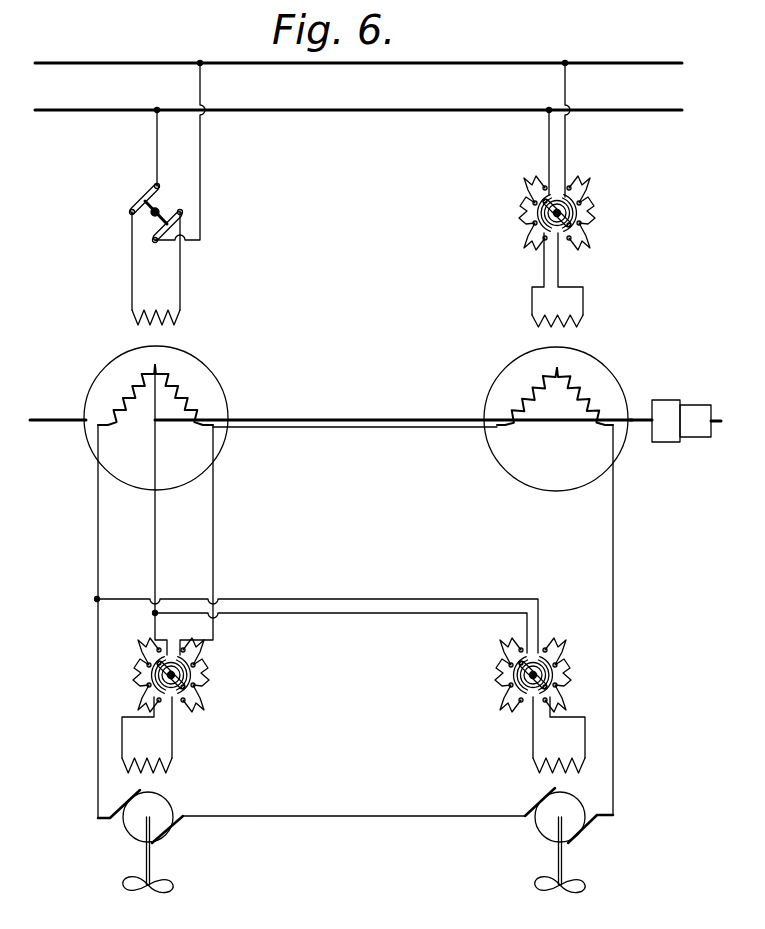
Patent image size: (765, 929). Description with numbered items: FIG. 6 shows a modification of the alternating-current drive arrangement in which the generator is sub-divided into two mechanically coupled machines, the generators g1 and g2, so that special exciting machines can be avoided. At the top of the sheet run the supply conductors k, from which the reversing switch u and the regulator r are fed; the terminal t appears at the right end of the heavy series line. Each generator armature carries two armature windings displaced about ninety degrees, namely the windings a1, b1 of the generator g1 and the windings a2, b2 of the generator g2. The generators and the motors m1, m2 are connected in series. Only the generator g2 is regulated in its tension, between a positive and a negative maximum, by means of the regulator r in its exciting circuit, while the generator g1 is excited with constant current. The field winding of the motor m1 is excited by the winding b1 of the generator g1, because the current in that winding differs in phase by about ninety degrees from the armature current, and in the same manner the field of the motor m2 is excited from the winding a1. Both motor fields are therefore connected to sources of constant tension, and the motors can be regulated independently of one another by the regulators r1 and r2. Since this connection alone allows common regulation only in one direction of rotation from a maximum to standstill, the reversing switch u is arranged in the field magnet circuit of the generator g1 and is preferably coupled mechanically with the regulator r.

The supply mains k is at (358, 87).
The reversing switch u is at (147, 194).
The regulator r is at (570, 195).
The generator g1 is at (175, 418).
The generator g2 is at (541, 419).
The armature winding a1 is at (125, 395).
The armature winding a2 is at (527, 396).
The armature winding b1 is at (184, 395).
The armature winding b2 is at (585, 396).
The contact plug t is at (675, 403).
The regulator r1 is at (182, 705).
The regulator r2 is at (515, 705).
The motor m1 is at (162, 841).
The motor m2 is at (540, 840).